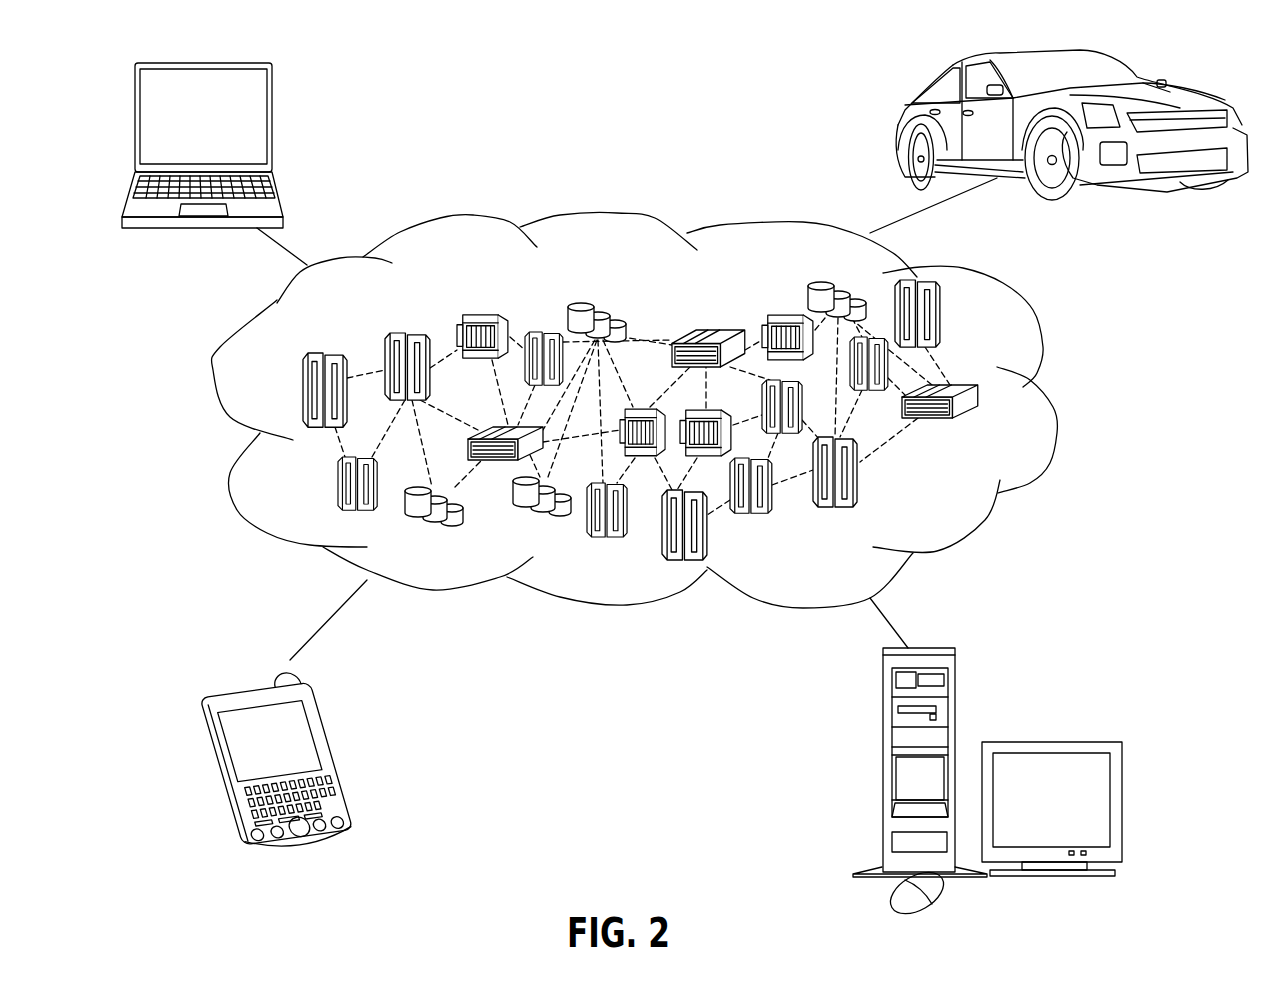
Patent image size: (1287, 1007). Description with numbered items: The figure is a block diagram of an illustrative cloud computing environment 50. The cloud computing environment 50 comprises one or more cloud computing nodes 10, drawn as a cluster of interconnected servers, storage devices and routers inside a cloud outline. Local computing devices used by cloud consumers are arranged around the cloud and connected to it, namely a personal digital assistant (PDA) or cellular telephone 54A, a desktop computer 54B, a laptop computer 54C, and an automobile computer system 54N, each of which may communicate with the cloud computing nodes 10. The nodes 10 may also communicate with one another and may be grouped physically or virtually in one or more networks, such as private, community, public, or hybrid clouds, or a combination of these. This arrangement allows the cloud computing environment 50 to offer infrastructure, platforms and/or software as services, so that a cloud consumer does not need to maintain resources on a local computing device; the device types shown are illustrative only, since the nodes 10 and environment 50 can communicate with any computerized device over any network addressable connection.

The cloud computing nodes 10 is at (960, 500).
The cloud computing environment 50 is at (1045, 402).
The personal digital assistant (PDA) or cellular telephone 54A is at (328, 721).
The desktop computer 54B is at (883, 708).
The laptop computer 54C is at (273, 102).
The automobile computer system 54N is at (902, 118).